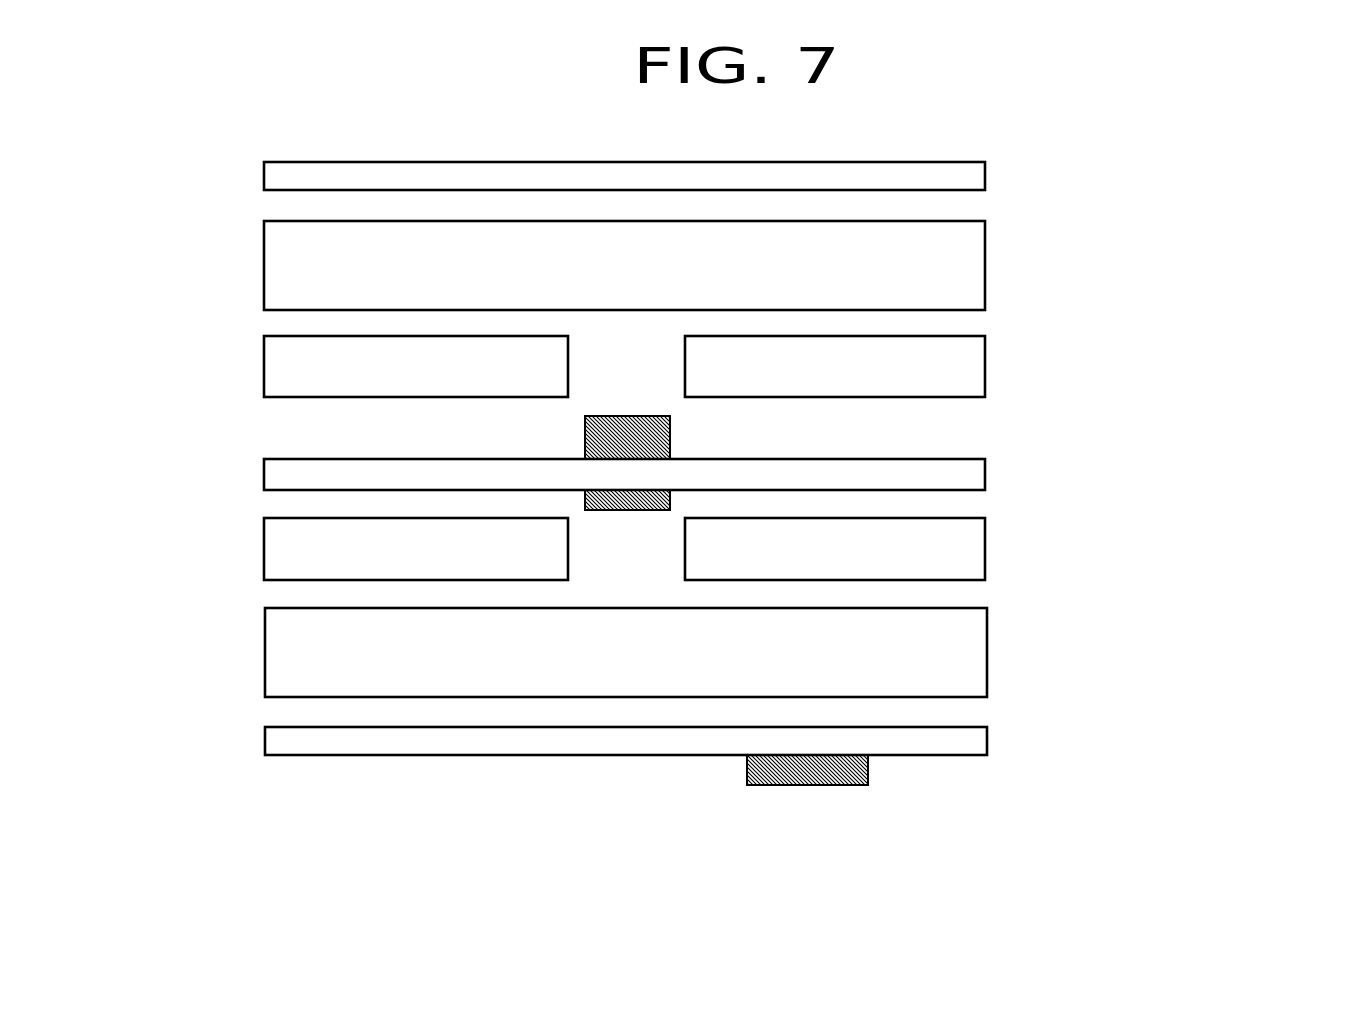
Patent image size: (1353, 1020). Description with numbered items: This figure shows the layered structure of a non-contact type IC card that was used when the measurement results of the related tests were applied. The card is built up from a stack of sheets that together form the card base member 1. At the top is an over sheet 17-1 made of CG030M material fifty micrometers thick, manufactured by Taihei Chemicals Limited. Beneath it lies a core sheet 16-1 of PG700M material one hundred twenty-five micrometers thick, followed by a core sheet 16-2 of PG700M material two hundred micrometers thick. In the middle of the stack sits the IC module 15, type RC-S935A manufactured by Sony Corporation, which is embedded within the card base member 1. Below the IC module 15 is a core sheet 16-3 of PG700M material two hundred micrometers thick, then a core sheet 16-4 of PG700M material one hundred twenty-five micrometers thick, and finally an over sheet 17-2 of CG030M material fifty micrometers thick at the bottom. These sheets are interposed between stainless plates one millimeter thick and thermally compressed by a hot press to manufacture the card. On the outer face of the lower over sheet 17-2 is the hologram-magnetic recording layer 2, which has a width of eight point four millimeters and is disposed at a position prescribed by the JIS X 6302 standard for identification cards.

The over sheet 17-1 is at (985, 170).
The core sheet 16-1 is at (985, 268).
The core sheet 16-2 is at (985, 362).
The IC module 15 is at (985, 470).
The core sheet 16-3 is at (985, 547).
The core sheet 16-4 is at (987, 654).
The over sheet 17-2 is at (987, 742).
The hologram-magnetic recording layer 2 is at (882, 842).
The card base member 1 is at (223, 161).